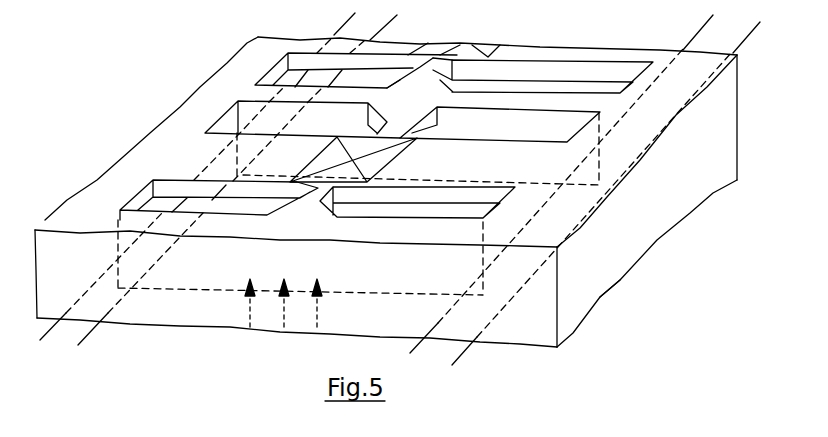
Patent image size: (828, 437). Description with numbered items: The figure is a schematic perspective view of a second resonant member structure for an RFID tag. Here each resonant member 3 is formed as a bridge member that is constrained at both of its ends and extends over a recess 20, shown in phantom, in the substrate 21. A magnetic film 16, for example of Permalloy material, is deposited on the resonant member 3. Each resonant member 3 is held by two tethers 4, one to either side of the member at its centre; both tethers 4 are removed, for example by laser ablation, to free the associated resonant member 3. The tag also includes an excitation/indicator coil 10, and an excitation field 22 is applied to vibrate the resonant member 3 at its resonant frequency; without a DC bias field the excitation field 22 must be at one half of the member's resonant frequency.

The excitation/indicator coil 10 is at (737, 55).
The resonant member 3 is at (535, 52).
The tether 4 is at (437, 58).
The magnetic film 16 is at (465, 44).
The recess 20 is at (462, 215).
The substrate 21 is at (660, 223).
The excitation field 22 is at (322, 311).